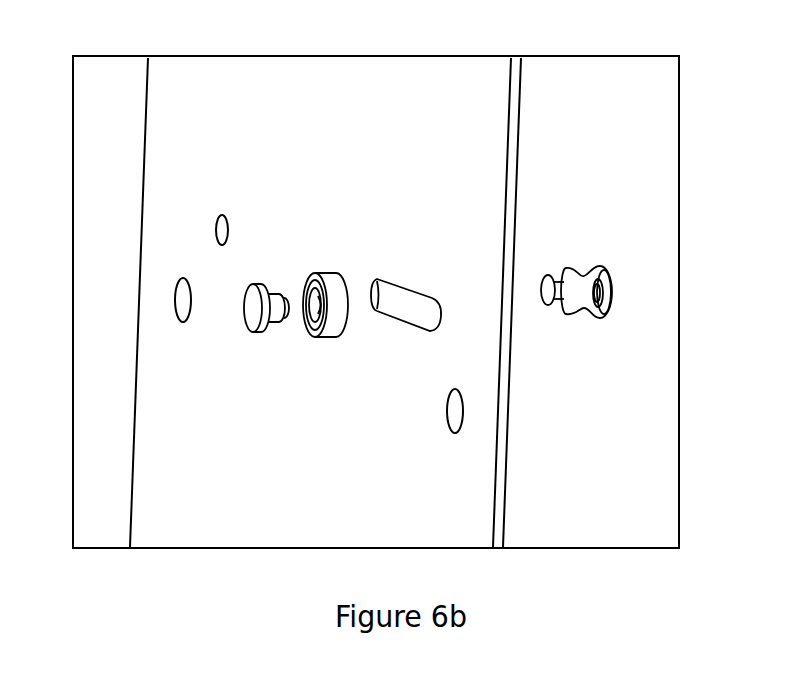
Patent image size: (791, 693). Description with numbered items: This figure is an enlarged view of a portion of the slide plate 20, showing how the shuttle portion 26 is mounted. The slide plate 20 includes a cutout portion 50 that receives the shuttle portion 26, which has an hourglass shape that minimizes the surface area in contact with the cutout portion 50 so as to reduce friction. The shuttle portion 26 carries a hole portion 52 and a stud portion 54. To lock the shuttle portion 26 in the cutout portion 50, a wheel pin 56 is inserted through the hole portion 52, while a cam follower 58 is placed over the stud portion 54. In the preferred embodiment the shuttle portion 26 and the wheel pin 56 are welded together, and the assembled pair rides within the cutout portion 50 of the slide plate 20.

The slide plate 20 is at (460, 469).
The shuttle portion 26 is at (612, 318).
The cutout portion 50 is at (403, 298).
The hole portion 52 is at (600, 292).
The stud portion 54 is at (548, 276).
The wheel pin 56 is at (248, 308).
The cam follower 58 is at (317, 340).